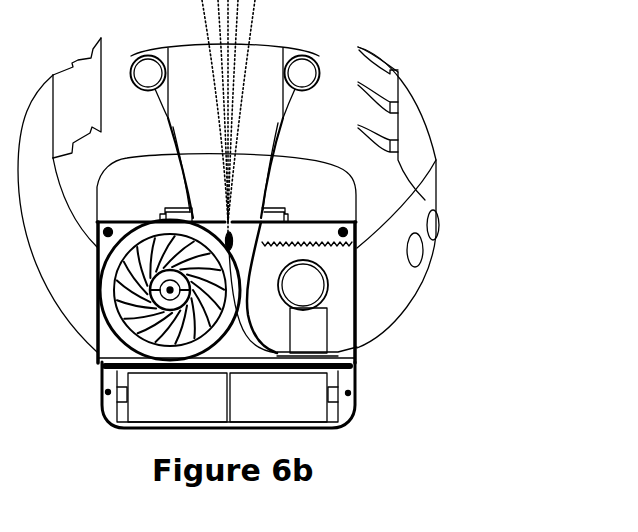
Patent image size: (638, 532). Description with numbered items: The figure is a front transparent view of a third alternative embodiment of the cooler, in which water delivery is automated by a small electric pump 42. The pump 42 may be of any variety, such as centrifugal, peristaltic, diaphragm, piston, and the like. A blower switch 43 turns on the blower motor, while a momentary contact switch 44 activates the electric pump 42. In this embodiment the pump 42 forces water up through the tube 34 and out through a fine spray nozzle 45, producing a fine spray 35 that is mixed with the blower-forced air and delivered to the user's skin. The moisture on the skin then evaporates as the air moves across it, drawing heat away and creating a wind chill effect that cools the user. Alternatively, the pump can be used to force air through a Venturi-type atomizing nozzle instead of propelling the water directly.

The fine spray 35 is at (217, 12).
The tube 34 is at (233, 262).
The electric pump 42 is at (308, 330).
The blower switch 43 is at (417, 247).
The momentary contact switch 44 is at (431, 213).
The fine spray nozzle 45 is at (235, 243).